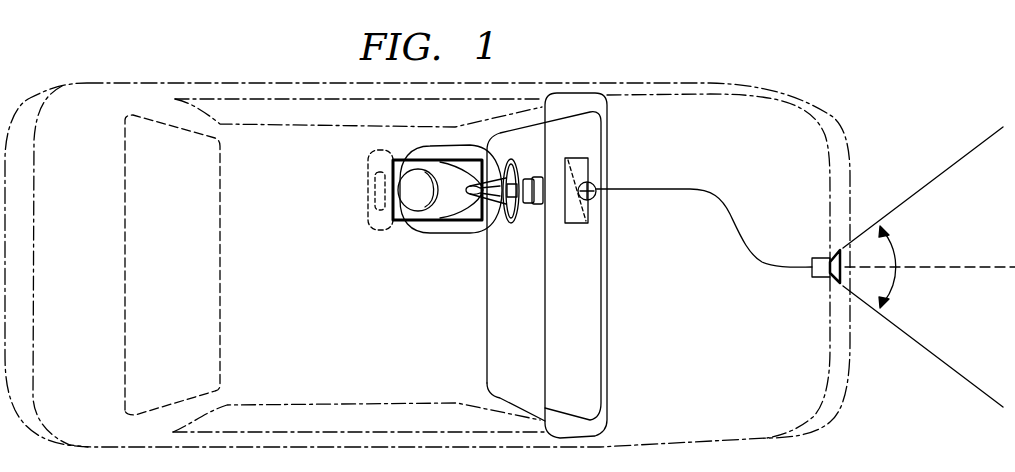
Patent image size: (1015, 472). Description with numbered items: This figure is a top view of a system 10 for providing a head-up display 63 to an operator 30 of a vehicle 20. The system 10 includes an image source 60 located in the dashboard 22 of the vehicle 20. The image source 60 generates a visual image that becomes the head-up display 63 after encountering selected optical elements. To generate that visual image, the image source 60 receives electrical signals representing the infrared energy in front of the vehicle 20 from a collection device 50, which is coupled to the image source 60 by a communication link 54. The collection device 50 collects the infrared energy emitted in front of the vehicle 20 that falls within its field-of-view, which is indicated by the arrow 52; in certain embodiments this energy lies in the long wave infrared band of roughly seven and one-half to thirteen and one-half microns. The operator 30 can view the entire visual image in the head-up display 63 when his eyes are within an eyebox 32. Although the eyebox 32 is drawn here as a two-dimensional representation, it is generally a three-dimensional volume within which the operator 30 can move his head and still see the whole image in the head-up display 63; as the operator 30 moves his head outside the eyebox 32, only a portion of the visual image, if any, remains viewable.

The system 10 is at (636, 53).
The vehicle 20 is at (170, 82).
The dashboard 22 is at (550, 354).
The operator 30 is at (404, 224).
The eyebox 32 is at (452, 224).
The collection device 50 is at (822, 257).
The arrow indicating field-of-view 52 is at (898, 281).
The communication link 54 is at (663, 188).
The image source 60 is at (598, 198).
The head-up display 63 is at (560, 214).